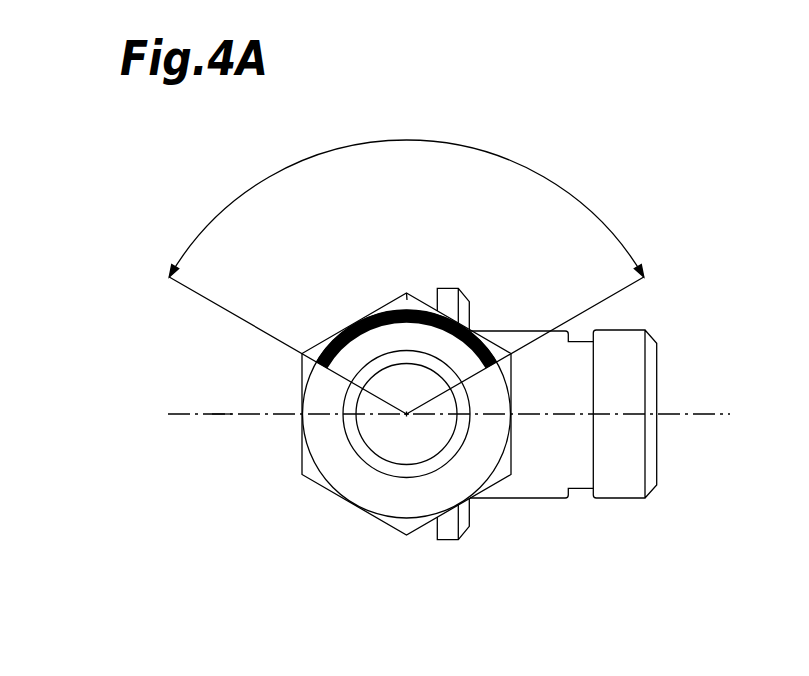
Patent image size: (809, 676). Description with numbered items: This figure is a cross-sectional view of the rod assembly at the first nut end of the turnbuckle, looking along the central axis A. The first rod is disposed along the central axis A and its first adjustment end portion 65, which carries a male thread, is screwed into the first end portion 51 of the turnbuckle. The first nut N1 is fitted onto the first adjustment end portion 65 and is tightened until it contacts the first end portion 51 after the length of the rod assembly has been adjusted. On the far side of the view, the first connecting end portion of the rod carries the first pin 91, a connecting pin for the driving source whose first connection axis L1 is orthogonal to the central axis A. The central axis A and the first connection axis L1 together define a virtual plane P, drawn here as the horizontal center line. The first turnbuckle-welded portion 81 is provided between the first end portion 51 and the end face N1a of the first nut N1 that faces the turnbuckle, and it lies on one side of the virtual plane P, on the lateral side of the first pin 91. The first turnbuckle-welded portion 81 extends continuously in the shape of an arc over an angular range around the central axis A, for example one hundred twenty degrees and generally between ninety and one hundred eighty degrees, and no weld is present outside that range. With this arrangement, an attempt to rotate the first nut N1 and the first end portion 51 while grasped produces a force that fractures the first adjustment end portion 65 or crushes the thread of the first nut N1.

The first end portion 51 is at (330, 467).
The first adjustment end portion 65 is at (415, 445).
The first turnbuckle-welded portion 81 is at (351, 317).
The first pin 91 is at (625, 500).
The first nut N1 is at (283, 447).
The end face of the first nut N1a is at (408, 297).
The first connection axis L1 is at (688, 410).
The virtual plane P is at (222, 413).
The central axis A is at (407, 414).